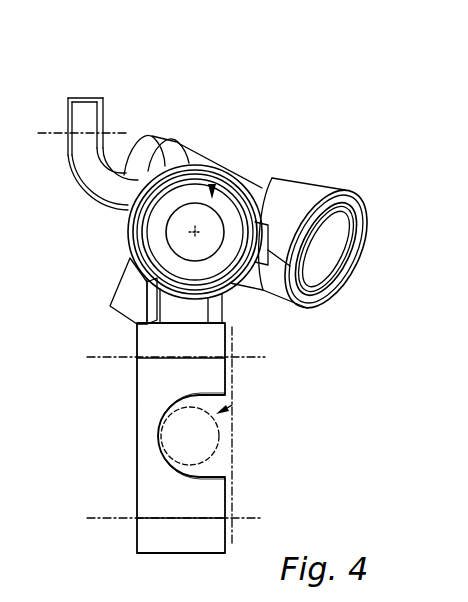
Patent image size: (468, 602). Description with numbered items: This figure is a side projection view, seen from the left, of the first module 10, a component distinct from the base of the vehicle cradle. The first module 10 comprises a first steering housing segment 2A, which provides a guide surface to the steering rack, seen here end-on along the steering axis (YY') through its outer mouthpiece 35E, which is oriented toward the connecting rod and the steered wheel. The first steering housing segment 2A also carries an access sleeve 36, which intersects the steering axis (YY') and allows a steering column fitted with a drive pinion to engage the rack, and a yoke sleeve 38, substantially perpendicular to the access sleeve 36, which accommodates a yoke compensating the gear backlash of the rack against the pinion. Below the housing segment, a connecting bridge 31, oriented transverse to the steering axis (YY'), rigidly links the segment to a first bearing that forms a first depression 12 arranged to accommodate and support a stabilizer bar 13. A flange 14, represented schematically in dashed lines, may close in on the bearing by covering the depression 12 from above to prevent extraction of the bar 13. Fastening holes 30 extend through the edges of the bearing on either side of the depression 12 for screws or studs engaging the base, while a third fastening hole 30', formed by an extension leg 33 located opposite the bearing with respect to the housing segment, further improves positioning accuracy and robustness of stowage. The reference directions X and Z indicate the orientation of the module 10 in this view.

The first module 10 is at (232, 277).
The first depression 12 is at (146, 440).
The stabilizer bar 13 is at (235, 447).
The flange 14 is at (234, 405).
The first steering housing segment 2A is at (212, 185).
The fastening holes 30 is at (197, 438).
The third fastening hole 30' is at (65, 113).
The connecting bridge 31 is at (226, 319).
The extension leg 33 is at (78, 165).
The outer mouthpiece 35E is at (130, 260).
The access sleeve 36 is at (307, 187).
The yoke sleeve 38 is at (115, 296).
The X axis X is at (192, 127).
The Z axis Z is at (368, 244).
The steering axis YY' is at (117, 231).